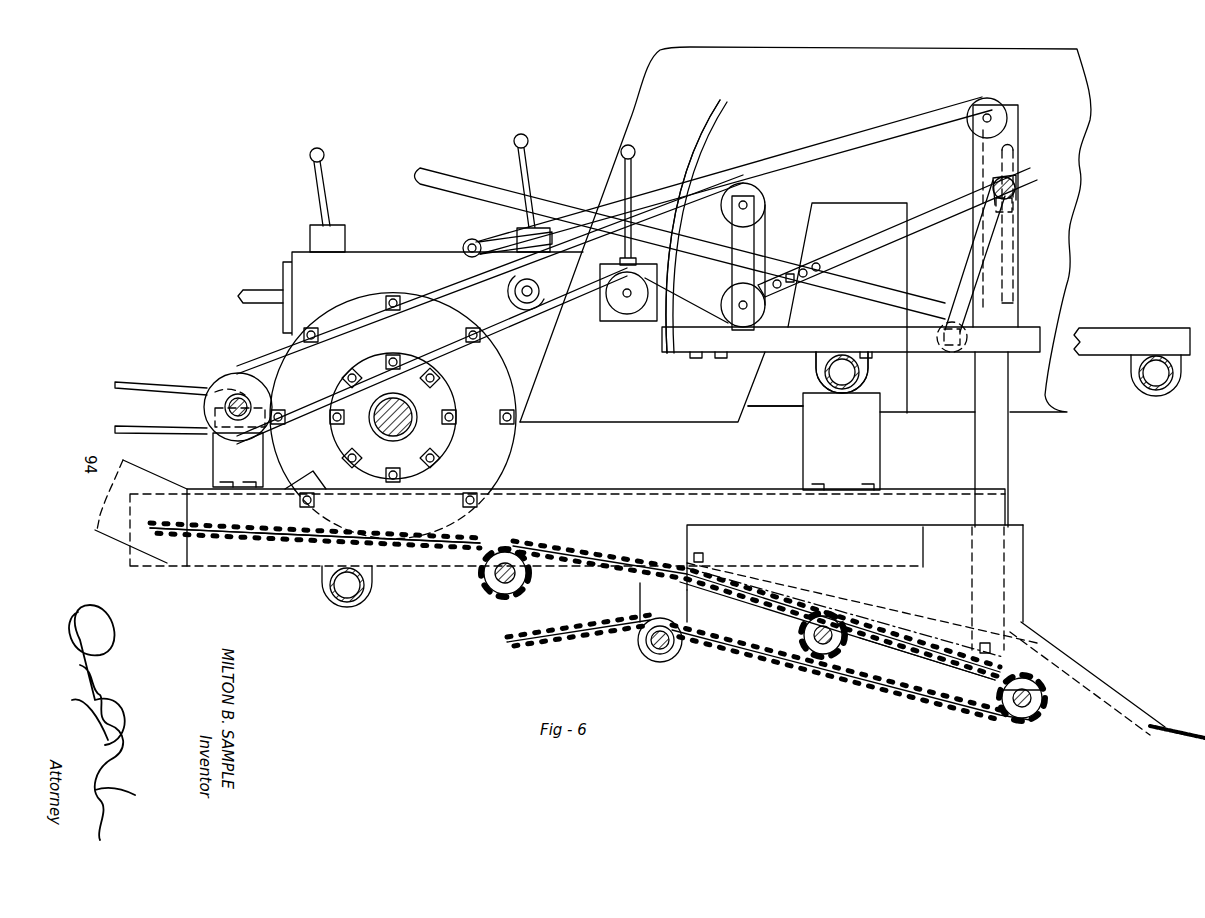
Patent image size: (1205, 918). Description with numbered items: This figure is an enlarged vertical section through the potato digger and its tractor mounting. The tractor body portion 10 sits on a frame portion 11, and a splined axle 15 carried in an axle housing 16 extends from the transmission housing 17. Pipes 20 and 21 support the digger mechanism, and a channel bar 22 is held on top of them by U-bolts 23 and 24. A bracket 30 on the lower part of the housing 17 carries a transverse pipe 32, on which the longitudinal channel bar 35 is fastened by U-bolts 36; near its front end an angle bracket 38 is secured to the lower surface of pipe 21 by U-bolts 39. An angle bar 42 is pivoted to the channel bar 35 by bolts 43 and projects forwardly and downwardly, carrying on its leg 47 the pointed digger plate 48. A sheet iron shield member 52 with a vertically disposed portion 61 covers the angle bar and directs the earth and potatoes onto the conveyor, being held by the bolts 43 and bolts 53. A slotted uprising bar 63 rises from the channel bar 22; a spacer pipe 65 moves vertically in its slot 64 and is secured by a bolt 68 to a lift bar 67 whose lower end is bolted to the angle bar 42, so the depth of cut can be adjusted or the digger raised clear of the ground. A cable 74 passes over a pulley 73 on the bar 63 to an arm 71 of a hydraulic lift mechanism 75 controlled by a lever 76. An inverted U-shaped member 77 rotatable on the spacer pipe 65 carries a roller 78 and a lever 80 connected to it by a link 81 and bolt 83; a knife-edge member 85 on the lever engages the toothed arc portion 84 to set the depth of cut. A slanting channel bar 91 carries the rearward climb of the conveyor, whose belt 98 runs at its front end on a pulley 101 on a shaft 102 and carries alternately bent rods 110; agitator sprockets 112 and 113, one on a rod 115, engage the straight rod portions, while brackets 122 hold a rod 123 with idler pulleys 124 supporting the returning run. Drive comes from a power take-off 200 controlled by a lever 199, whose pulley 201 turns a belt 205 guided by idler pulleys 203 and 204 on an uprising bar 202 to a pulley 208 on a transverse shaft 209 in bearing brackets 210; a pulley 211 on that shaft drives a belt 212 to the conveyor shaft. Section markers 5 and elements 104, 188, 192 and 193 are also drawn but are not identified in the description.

The body portion 10 is at (648, 86).
The frame portion 11 is at (775, 407).
The splined axle 15 is at (409, 411).
The axle housing 16 is at (413, 430).
The transmission housing 17 is at (393, 416).
The pipe 20 is at (1171, 390).
The pipe 21 is at (861, 373).
The channel bar 22 is at (1124, 336).
The U-bolt 23 is at (1134, 394).
The U-bolt 24 is at (822, 356).
The bracket 30 is at (311, 477).
The transverse pipe 32 is at (345, 596).
The channel bar 35 is at (255, 571).
The U-bolt 36 is at (371, 592).
The angle bracket 38 is at (841, 441).
The U-bolt 39 is at (821, 381).
The angle bar 42 is at (913, 656).
The bolt 43 is at (700, 555).
The leg 47 is at (998, 687).
The digger plate 48 is at (1178, 729).
The shield member 52 is at (1050, 646).
The bolt 53 is at (985, 643).
The section line 5 is at (1048, 663).
The vertically disposed portion 61 is at (1025, 579).
The bar 63 is at (976, 176).
The slot 64 is at (1002, 150).
The spacer pipe 65 is at (1016, 186).
The lift bar 67 is at (1010, 477).
The bolt 68 is at (1017, 197).
The arm 71 is at (468, 243).
The pulley 73 is at (998, 100).
The cable 74 is at (806, 151).
The hydraulic lift mechanism 75 is at (538, 290).
The lever 76 is at (532, 178).
The inverted U-shaped member 77 is at (966, 263).
The roller 78 is at (950, 321).
The lever 80 is at (440, 174).
The link 81 is at (886, 248).
The bolt 83 is at (1013, 208).
The arc portion 84 is at (712, 121).
The member 85 is at (689, 248).
The channel bar 91 is at (142, 479).
The belt 98 is at (754, 606).
The pulley 101 is at (1004, 700).
The shaft 102 is at (1004, 729).
The sprocket 104 is at (802, 641).
The rods 110 is at (268, 526).
The agitator sprocket 112 is at (920, 659).
The agitator sprocket 113 is at (526, 583).
The rod 115 is at (488, 586).
The bracket 122 is at (640, 598).
The rod 123 is at (670, 650).
The idler pulley 124 is at (655, 656).
The shaft 188 is at (257, 297).
The lever housing 192 is at (345, 243).
The control lever 193 is at (327, 203).
The lever 199 is at (630, 168).
The power take-off 200 is at (628, 318).
The pulley 201 is at (610, 297).
The uprising bar 202 is at (758, 234).
The idler pulley 203 is at (766, 210).
The idler pulley 204 is at (722, 313).
The belt 205 is at (470, 291).
The pulley 208 is at (266, 393).
The transverse shaft 209 is at (262, 410).
The bearing bracket 210 is at (238, 460).
The pulley 211 is at (231, 373).
The belt 212 is at (150, 385).